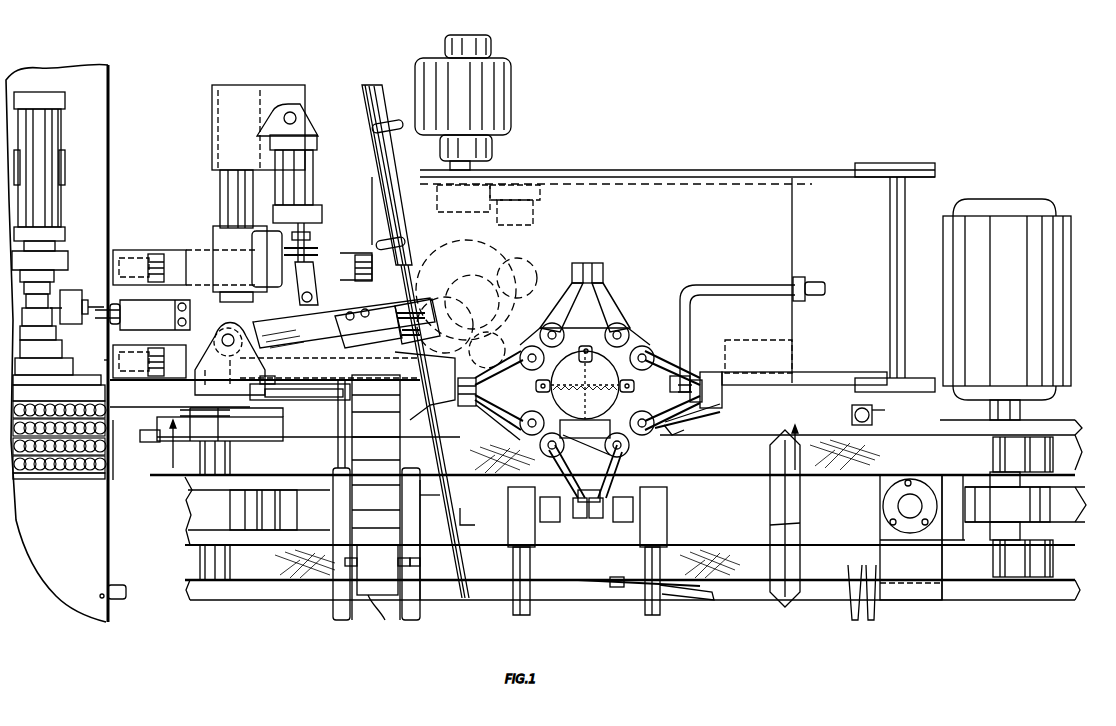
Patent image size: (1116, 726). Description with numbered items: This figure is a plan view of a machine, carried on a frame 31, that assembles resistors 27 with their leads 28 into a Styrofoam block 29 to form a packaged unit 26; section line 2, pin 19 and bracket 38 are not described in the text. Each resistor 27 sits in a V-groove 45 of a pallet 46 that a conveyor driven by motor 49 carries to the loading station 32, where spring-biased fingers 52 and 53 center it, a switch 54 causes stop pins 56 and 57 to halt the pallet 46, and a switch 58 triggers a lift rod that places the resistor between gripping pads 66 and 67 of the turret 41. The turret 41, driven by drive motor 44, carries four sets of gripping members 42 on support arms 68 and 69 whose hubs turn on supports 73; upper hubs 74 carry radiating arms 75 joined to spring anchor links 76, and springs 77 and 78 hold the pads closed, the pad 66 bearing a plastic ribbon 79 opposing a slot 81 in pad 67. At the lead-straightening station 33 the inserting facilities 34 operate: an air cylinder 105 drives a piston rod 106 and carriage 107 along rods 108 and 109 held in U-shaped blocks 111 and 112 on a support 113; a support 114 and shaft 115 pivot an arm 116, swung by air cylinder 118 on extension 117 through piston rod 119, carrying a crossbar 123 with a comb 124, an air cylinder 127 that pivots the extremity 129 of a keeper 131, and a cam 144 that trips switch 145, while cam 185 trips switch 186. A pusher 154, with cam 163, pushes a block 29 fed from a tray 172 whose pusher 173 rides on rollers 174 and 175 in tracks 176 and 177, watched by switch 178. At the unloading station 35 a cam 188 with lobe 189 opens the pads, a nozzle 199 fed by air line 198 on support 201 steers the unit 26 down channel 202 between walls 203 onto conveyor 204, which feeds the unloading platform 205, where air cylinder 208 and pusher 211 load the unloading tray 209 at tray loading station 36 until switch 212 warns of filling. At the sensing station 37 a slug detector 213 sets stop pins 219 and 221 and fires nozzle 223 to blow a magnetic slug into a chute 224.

The section line 2 is at (489, 445).
The pin 19 is at (584, 492).
The packaged unit 26 is at (58, 476).
The resistor 27 is at (458, 398).
The lead 28 is at (478, 368).
The block 29 is at (420, 392).
The frame 31 is at (710, 182).
The loading station 32 is at (590, 530).
The lead-straightening station 33 is at (494, 318).
The inserting facilities 34 is at (334, 402).
The unloading station 35 is at (714, 350).
The tray loading station 36 is at (118, 420).
The sensing station 37 is at (910, 460).
The bracket 38 is at (525, 508).
The turret 41 is at (656, 290).
The gripping members 42 is at (583, 383).
The drive motor 44 is at (480, 36).
The V-groove 45 is at (780, 520).
The pallet 46 is at (790, 524).
The motor 49 is at (1070, 238).
The spring-biased finger 52 is at (679, 440).
The spring-biased finger 53 is at (680, 596).
The switch 54 is at (586, 450).
The stop pin 56 is at (585, 471).
The stop pin 57 is at (582, 582).
The switch 58 is at (616, 588).
The gripping pad 66 is at (600, 270).
The gripping pad 67 is at (572, 268).
The support arm 68 is at (570, 292).
The support arm 69 is at (498, 422).
The support 73 is at (583, 381).
The hub 74 is at (546, 330).
The radiating arm 75 is at (596, 330).
The spring anchor link 76 is at (602, 390).
The spring 77 is at (585, 373).
The spring 78 is at (618, 388).
The plastic ribbon 79 is at (592, 264).
The slot 81 is at (600, 458).
The air cylinder 105 is at (62, 338).
The piston rod 106 is at (110, 303).
The carriage 107 is at (180, 250).
The rod 108 is at (166, 252).
The rod 109 is at (156, 348).
The U-shaped block 111 is at (112, 250).
The U-shaped block 112 is at (135, 346).
The support 113 is at (206, 236).
The support 114 is at (226, 332).
The shaft 115 is at (230, 332).
The arm 116 is at (256, 332).
The extension 117 is at (222, 186).
The air cylinder 118 is at (308, 160).
The piston rod 119 is at (310, 230).
The crossbar 123 is at (414, 282).
The comb 124 is at (438, 328).
The air cylinder 127 is at (386, 140).
The extremity 129 is at (460, 350).
The keeper 131 is at (450, 536).
The cam 144 is at (426, 310).
The switch 145 is at (338, 352).
The pusher 154 is at (306, 402).
The cam 163 is at (478, 356).
The tray 172 is at (356, 448).
The pusher 173 is at (370, 614).
The roller 174 is at (346, 574).
The roller 175 is at (420, 563).
The track 176 is at (352, 526).
The track 177 is at (412, 520).
The switch 178 is at (436, 496).
The cam 185 is at (316, 250).
The switch 186 is at (290, 280).
The cam 188 is at (636, 340).
The lobe 189 is at (680, 396).
The air line 198 is at (770, 284).
The nozzle 199 is at (716, 410).
The support 201 is at (792, 278).
The channel 202 is at (760, 412).
The vertical wall 203 is at (764, 402).
The conveyor 204 is at (130, 400).
The unloading platform 205 is at (104, 196).
The air cylinder 208 is at (58, 165).
The unloading tray 209 is at (110, 494).
The pusher 211 is at (88, 386).
The switch 212 is at (126, 592).
The slug detector 213 is at (882, 540).
The stop pin 219 is at (846, 430).
The stop pin 221 is at (848, 590).
The nozzle 223 is at (872, 414).
The chute 224 is at (868, 606).